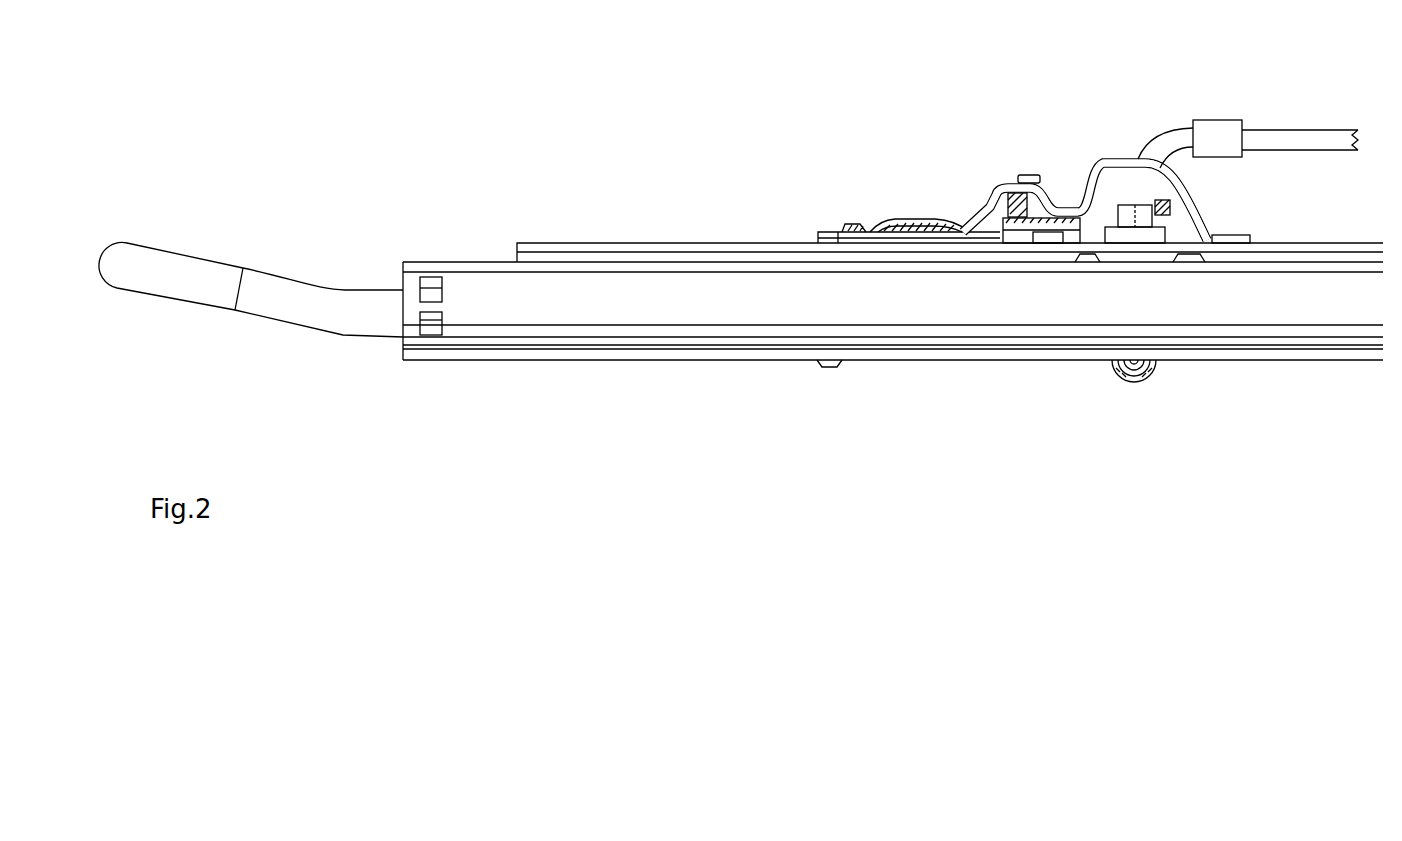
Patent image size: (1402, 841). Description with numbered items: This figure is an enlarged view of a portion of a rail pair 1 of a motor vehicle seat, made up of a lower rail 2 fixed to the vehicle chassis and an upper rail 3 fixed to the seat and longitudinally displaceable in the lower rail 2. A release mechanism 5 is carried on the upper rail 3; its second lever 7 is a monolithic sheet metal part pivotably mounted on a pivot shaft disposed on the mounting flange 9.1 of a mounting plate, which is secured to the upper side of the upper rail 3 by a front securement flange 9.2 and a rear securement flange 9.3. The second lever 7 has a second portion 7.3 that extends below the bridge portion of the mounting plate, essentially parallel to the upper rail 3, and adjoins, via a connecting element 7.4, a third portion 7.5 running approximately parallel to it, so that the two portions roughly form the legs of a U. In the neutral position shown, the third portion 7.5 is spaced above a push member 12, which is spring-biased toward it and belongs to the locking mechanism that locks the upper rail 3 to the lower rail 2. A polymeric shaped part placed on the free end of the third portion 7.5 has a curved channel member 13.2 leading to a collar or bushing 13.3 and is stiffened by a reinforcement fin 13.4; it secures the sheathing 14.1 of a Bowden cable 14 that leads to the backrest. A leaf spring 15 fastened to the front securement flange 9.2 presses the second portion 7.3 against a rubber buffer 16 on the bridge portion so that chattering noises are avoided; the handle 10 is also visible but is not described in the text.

The rail pair 1 is at (453, 129).
The lower rail 2 is at (451, 262).
The upper rail 3 is at (570, 250).
The release mechanism 5 is at (1138, 68).
The second lever 7 is at (975, 208).
The second portion 7.3 is at (1003, 186).
The connecting element 7.4 is at (1058, 182).
The third portion 7.5 is at (1126, 203).
The mounting flange 9.1 is at (1083, 174).
The front securement flange 9.2 is at (867, 230).
The rear securement flange 9.3 is at (1247, 237).
The handle 10 is at (167, 250).
The push member 12 is at (1125, 218).
The curved channel member 13.2 is at (1170, 140).
The collar or bushing 13.3 is at (1220, 122).
The reinforcement fin 13.4 is at (1190, 167).
The Bowden cable 14 is at (1334, 113).
The sheathing 14.1 is at (1283, 134).
The leaf spring 15 is at (923, 220).
The rubber buffer 16 is at (1019, 200).